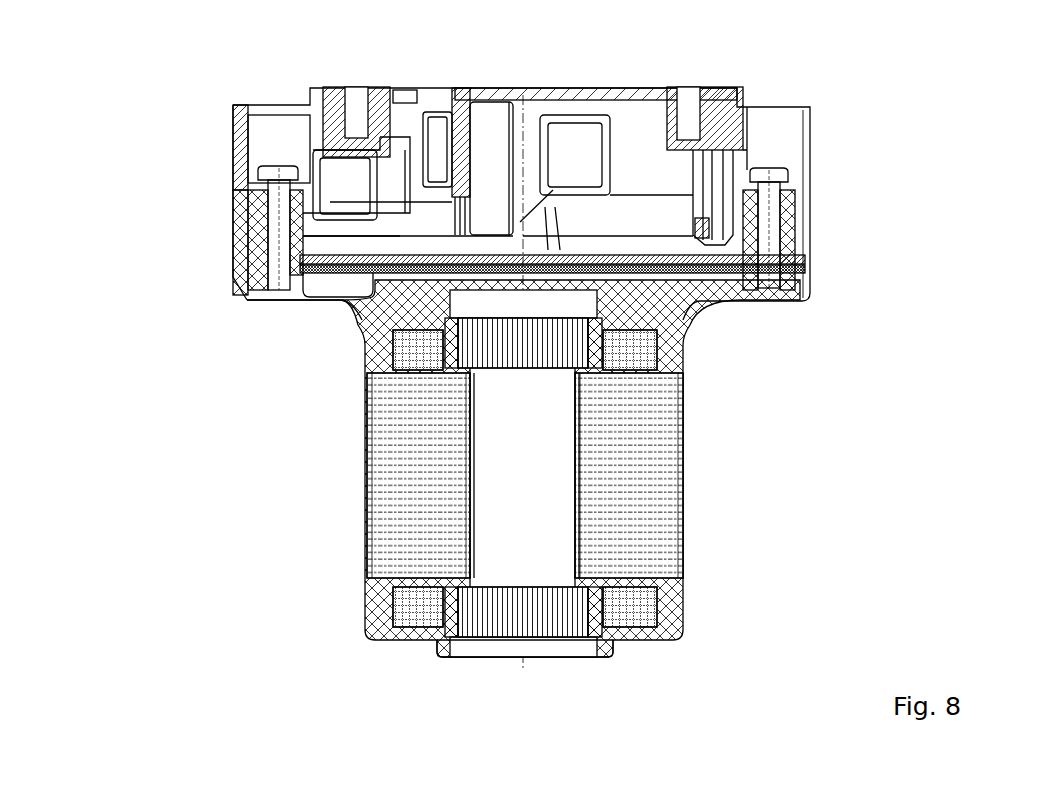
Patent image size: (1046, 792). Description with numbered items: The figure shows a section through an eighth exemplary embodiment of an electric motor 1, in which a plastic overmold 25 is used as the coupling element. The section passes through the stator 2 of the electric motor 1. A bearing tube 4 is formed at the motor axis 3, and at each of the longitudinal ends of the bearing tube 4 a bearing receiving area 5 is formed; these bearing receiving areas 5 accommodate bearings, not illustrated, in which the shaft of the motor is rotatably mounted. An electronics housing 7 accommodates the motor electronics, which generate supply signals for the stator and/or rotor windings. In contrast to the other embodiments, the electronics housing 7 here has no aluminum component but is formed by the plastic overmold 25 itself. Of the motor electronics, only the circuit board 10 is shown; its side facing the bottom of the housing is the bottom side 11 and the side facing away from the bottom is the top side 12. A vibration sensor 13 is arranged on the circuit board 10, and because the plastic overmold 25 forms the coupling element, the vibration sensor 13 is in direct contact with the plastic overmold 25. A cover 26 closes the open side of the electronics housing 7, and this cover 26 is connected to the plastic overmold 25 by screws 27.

The electric motor 1 is at (103, 88).
The stator 2 is at (395, 480).
The motor axis 3 is at (520, 666).
The bearing tube 4 is at (572, 513).
The bearing receiving area 5 is at (582, 350).
The electronics housing 7 is at (400, 232).
The circuit board 10 is at (708, 259).
The bottom side 11 is at (684, 268).
The top side 12 is at (680, 248).
The vibration sensor 13 is at (305, 296).
The plastic overmold 25 is at (378, 320).
The cover 26 is at (720, 107).
The screws 27 is at (275, 234).